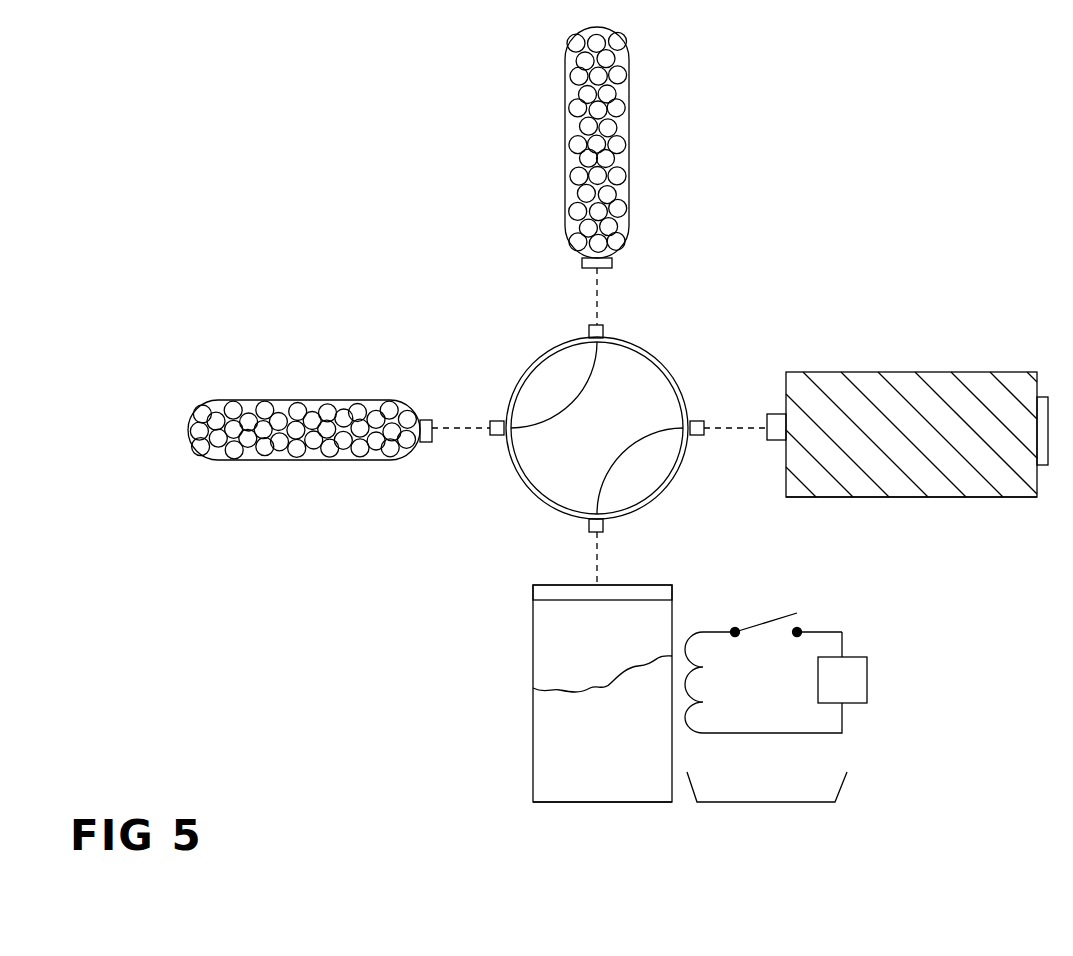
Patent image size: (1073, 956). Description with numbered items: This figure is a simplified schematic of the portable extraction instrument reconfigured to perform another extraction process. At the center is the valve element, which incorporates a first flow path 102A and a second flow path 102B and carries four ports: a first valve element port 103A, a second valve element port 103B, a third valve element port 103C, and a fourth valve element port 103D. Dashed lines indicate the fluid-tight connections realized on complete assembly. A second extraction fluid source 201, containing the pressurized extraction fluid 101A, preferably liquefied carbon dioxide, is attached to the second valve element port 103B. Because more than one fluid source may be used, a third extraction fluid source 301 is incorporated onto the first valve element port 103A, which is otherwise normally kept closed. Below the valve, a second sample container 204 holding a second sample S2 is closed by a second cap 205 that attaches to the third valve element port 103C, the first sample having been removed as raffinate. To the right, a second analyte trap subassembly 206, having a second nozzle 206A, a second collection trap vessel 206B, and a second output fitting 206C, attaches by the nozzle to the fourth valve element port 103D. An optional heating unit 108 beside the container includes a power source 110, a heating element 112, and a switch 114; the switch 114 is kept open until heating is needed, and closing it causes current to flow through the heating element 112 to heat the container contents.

The third extraction fluid source 301 is at (630, 133).
The pressurized extraction fluid 101A is at (258, 401).
The second extraction fluid source 201 is at (228, 461).
The first valve element port 103A is at (603, 328).
The second valve element port 103B is at (497, 436).
The third valve element port 103C is at (603, 527).
The fourth valve element port 103D is at (701, 421).
The first flow path 102A is at (565, 398).
The second flow path 102B is at (625, 458).
The second analyte trap subassembly 206 is at (948, 333).
The second nozzle 206A is at (776, 441).
The second collection trap vessel 206B is at (951, 497).
The second output fitting 206C is at (1052, 397).
The second sample container 204 is at (533, 634).
The second cap 205 is at (533, 593).
The second sample S2 is at (595, 793).
The heating element 112 is at (697, 738).
The switch 114 is at (767, 612).
The power source 110 is at (867, 674).
The heating unit 108 is at (760, 802).